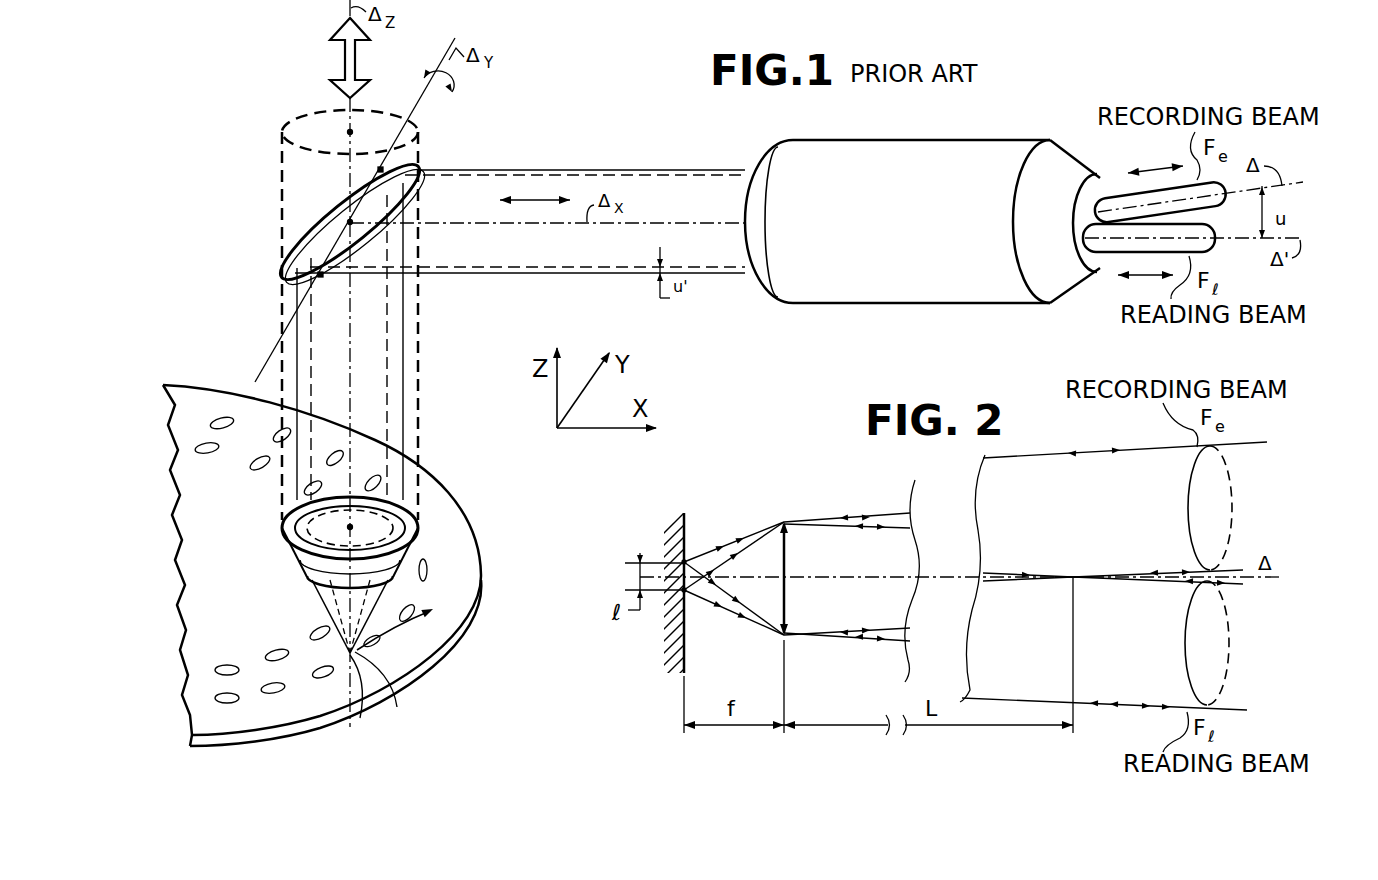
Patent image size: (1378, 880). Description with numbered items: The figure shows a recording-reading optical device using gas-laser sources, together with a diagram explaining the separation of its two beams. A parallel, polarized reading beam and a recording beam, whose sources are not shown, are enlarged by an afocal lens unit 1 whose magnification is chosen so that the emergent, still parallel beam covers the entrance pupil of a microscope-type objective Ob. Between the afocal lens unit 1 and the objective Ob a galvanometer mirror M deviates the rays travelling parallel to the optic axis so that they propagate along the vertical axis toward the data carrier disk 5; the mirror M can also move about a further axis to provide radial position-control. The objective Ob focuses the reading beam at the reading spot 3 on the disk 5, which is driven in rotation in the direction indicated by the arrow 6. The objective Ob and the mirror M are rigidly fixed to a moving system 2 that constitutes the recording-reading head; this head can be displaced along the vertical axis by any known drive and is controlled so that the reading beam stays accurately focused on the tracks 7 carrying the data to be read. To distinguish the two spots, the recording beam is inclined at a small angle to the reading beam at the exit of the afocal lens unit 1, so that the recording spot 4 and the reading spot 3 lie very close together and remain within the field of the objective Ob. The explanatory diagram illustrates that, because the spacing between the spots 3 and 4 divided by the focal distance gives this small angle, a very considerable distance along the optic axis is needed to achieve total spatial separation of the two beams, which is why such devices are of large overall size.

In FIG. 1, the afocal lens unit 1 is at (849, 140).
In FIG. 1, the moving system 2 is at (432, 133).
In FIG. 1, the reading spot 3 is at (366, 697).
In FIG. 2, the reading spot 3 is at (686, 560).
In FIG. 1, the recording spot 4 is at (387, 690).
In FIG. 2, the recording spot 4 is at (686, 592).
In FIG. 1, the data carrier disk 5 is at (443, 643).
In FIG. 2, the data carrier disk 5 is at (618, 700).
In FIG. 1, the arrow 6 is at (440, 618).
In FIG. 1, the tracks 7 is at (290, 655).
In FIG. 1, the galvanometer mirror M is at (425, 183).
In FIG. 1, the objective Ob is at (418, 532).